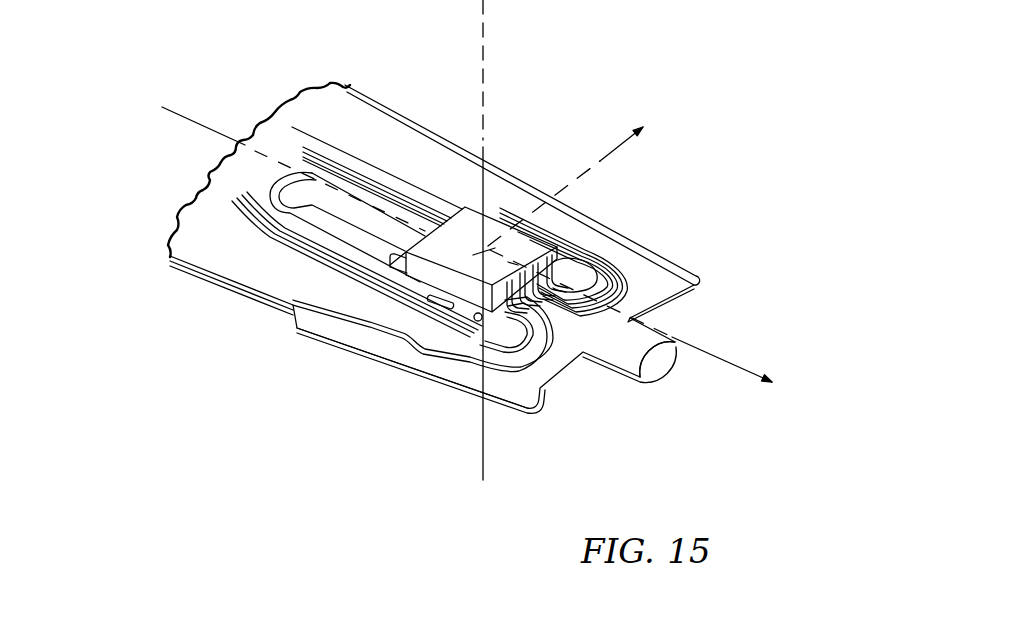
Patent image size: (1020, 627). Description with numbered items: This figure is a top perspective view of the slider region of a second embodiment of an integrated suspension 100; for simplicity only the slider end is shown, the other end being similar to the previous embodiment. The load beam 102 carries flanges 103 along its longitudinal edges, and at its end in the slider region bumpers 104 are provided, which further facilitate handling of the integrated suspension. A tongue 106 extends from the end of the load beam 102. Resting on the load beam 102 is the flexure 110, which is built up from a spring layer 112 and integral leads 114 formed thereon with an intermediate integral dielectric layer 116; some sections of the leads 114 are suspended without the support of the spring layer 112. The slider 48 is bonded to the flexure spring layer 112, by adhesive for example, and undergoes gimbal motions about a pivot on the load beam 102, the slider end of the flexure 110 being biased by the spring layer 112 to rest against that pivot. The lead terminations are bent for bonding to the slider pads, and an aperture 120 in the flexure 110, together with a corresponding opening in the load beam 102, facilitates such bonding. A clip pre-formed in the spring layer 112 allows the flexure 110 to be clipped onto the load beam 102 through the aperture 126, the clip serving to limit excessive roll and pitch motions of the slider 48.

The integrated suspension 100 is at (449, 240).
The load beam 102 is at (657, 272).
The flanges 103 is at (390, 107).
The bumpers 104 is at (625, 232).
The tongue 106 is at (653, 357).
The flexure 110 is at (322, 310).
The spring layer 112 is at (202, 237).
The integral leads 114 is at (291, 247).
The dielectric layer 116 is at (256, 238).
The aperture 120 is at (502, 330).
The aperture 126 is at (297, 188).
The slider 48 is at (490, 233).